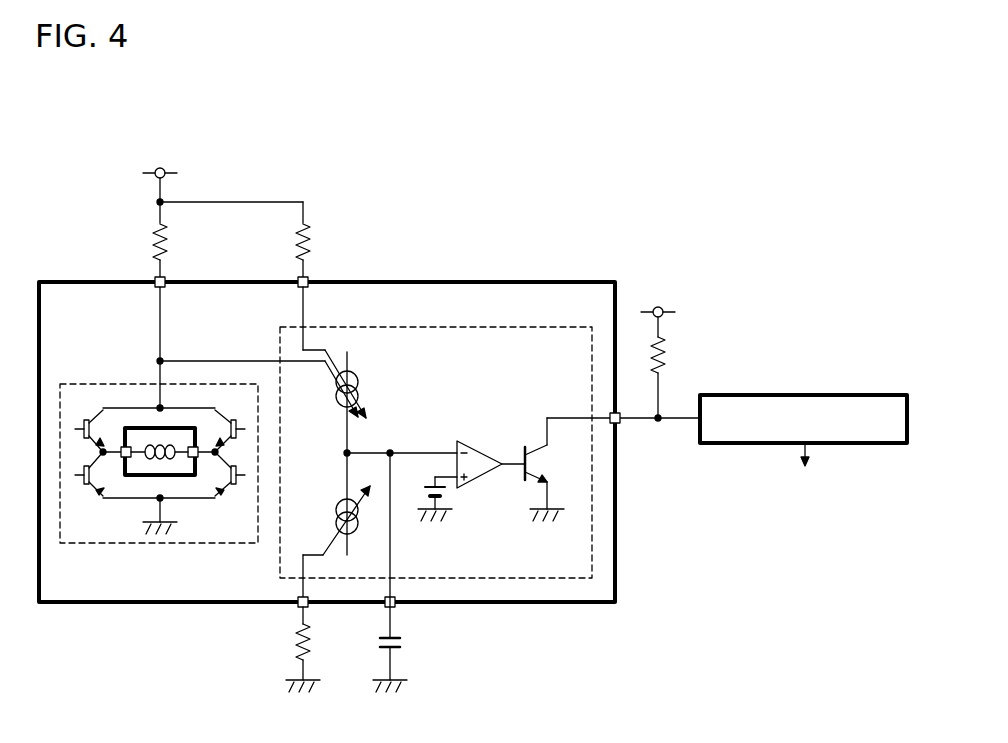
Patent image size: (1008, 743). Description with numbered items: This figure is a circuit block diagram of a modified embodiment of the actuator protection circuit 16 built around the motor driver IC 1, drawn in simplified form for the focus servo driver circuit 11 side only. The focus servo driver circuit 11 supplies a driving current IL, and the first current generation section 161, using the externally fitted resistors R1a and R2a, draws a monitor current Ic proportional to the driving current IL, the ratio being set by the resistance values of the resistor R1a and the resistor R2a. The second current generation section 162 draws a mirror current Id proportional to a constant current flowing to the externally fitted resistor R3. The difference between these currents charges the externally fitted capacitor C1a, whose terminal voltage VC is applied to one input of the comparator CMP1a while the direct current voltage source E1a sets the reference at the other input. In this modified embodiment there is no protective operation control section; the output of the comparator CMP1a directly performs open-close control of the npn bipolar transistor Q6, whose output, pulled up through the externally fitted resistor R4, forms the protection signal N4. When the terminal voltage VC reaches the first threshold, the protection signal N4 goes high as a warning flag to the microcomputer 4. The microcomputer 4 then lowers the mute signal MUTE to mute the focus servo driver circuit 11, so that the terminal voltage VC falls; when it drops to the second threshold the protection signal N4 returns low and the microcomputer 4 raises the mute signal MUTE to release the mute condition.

The motor driver IC 1 is at (460, 280).
The focus servo driver circuit 11 is at (92, 383).
The actuator protection circuit 16 is at (437, 326).
The first current generation section 161 is at (370, 368).
The second current generation section 162 is at (334, 516).
The microcomputer 4 is at (805, 394).
The resistor R1a is at (189, 252).
The resistor R2a is at (332, 252).
The resistor R3 is at (319, 649).
The resistor R4 is at (675, 362).
The capacitor C1a is at (414, 572).
The direct current voltage source E1a is at (418, 489).
The comparator CMP1a is at (479, 443).
The npn bipolar transistor Q6 is at (543, 469).
The protection signal N4 is at (578, 405).
The terminal voltage VC is at (353, 446).
The driving current IL is at (224, 347).
The monitor current Ic is at (330, 431).
The mirror current Id is at (332, 478).
The mute signal MUTE is at (807, 470).